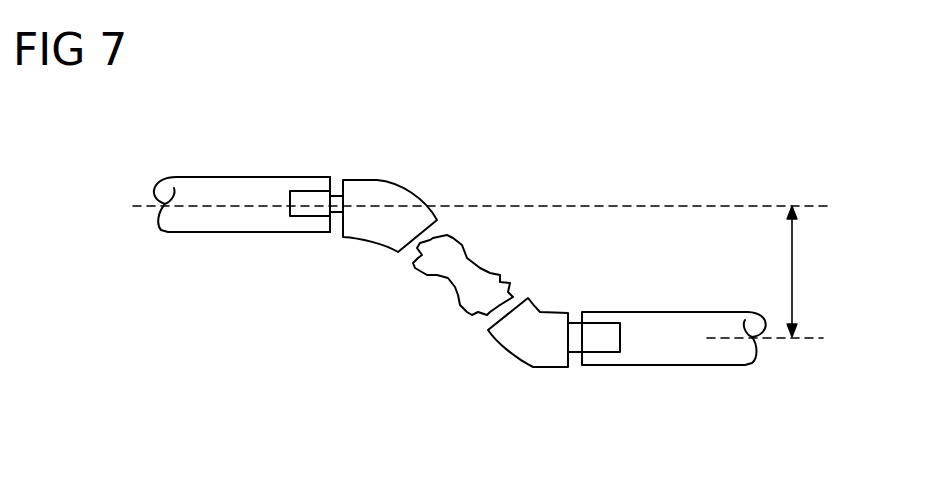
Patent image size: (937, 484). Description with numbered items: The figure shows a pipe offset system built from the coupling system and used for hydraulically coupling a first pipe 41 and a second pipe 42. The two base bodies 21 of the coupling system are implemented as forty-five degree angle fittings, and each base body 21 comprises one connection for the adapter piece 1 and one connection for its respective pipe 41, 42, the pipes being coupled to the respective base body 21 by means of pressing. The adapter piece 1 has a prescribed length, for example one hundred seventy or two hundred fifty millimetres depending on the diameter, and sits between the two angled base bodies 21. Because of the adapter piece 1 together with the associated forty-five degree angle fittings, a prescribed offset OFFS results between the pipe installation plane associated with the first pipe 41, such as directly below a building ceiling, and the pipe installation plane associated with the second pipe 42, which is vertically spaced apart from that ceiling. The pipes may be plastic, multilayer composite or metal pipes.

The adapter piece 1 is at (460, 277).
The base body 21 is at (363, 222).
The first pipe 41 is at (190, 207).
The second pipe 42 is at (682, 348).
The offset OFFS is at (792, 260).